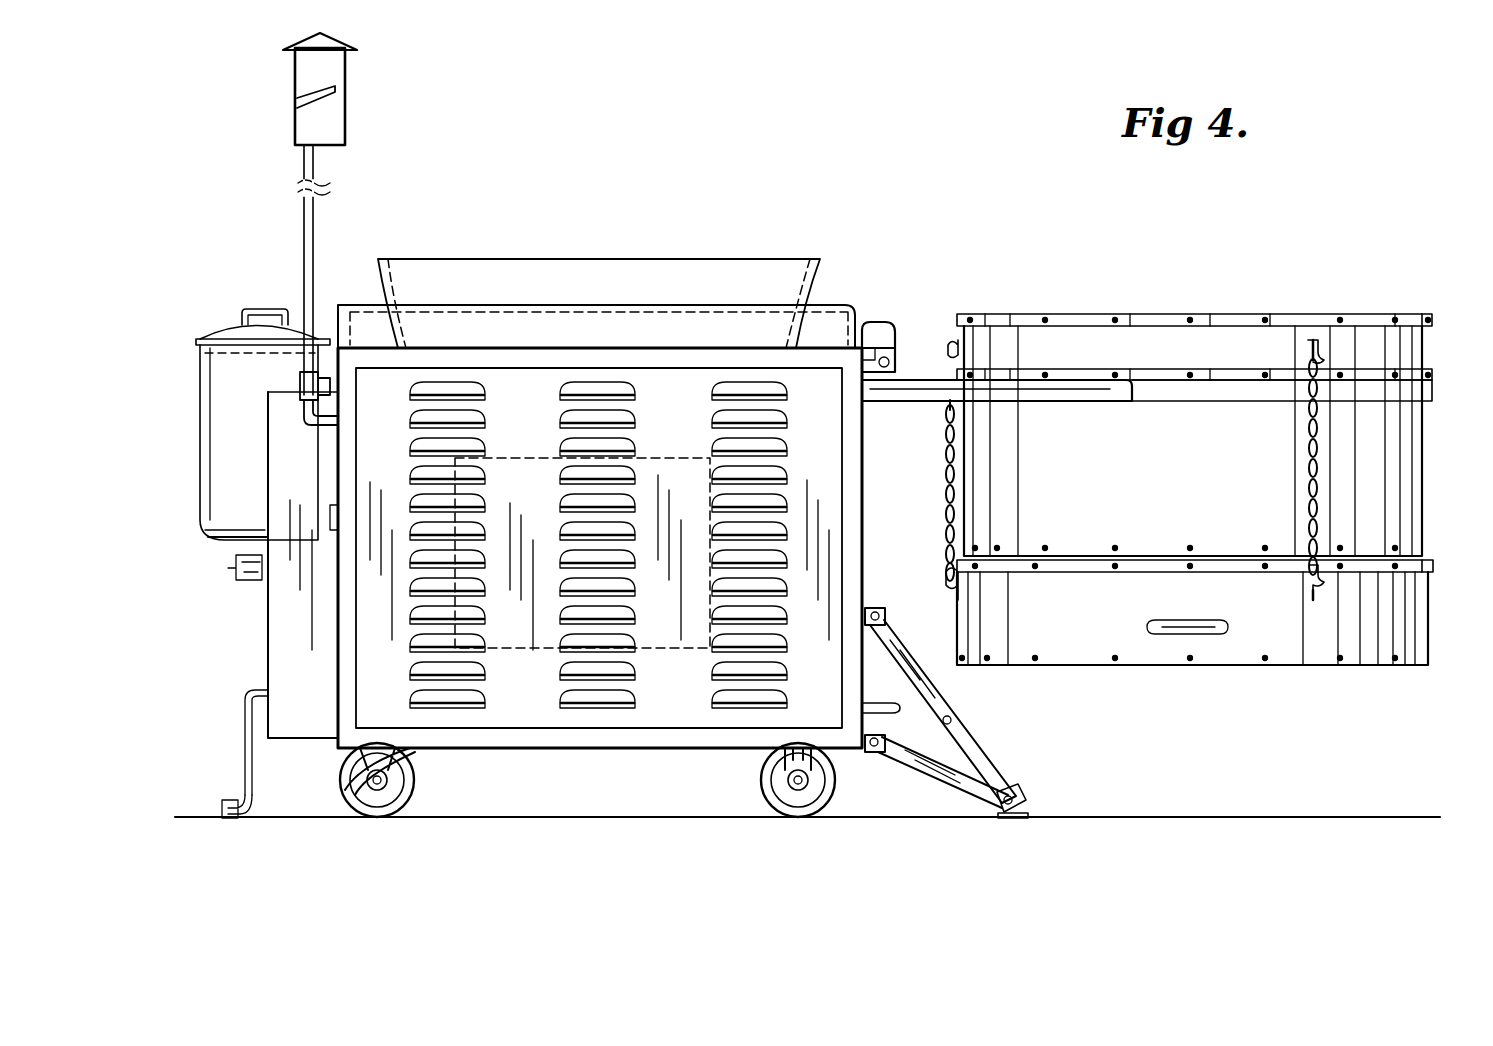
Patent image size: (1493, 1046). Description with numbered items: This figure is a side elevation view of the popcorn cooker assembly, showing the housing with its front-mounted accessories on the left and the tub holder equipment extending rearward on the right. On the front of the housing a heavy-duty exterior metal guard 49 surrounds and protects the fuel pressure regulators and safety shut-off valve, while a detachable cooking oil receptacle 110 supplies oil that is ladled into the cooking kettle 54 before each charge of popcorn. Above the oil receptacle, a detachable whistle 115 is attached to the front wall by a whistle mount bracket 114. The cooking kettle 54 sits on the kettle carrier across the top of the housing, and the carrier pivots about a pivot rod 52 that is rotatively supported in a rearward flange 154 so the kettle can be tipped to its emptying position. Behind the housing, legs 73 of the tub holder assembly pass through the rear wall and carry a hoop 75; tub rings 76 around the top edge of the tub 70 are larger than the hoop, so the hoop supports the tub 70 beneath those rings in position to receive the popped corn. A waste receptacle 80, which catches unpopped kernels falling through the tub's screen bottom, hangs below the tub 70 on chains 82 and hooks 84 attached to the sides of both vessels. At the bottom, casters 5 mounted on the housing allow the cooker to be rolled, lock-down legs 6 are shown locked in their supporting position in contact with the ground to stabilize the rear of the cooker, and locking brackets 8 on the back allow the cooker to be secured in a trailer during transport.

The whistle 115 is at (300, 72).
The cooking oil receptacle 110 is at (232, 375).
The whistle mount bracket 114 is at (305, 382).
The exterior metal guard 49 is at (287, 632).
The cooking kettle 54 is at (616, 258).
The pivot rod 52 is at (882, 356).
The flange 154 is at (905, 374).
The legs 73 is at (915, 395).
The tub 70 is at (1382, 483).
The waste receptacle 80 is at (1372, 637).
The chains 82 is at (946, 500).
The hooks 84 is at (958, 348).
The tub rings 76 is at (1432, 376).
The hoop 75 is at (1428, 396).
The casters 5 is at (412, 780).
The legs 6 is at (972, 747).
The locking brackets 8 is at (892, 702).